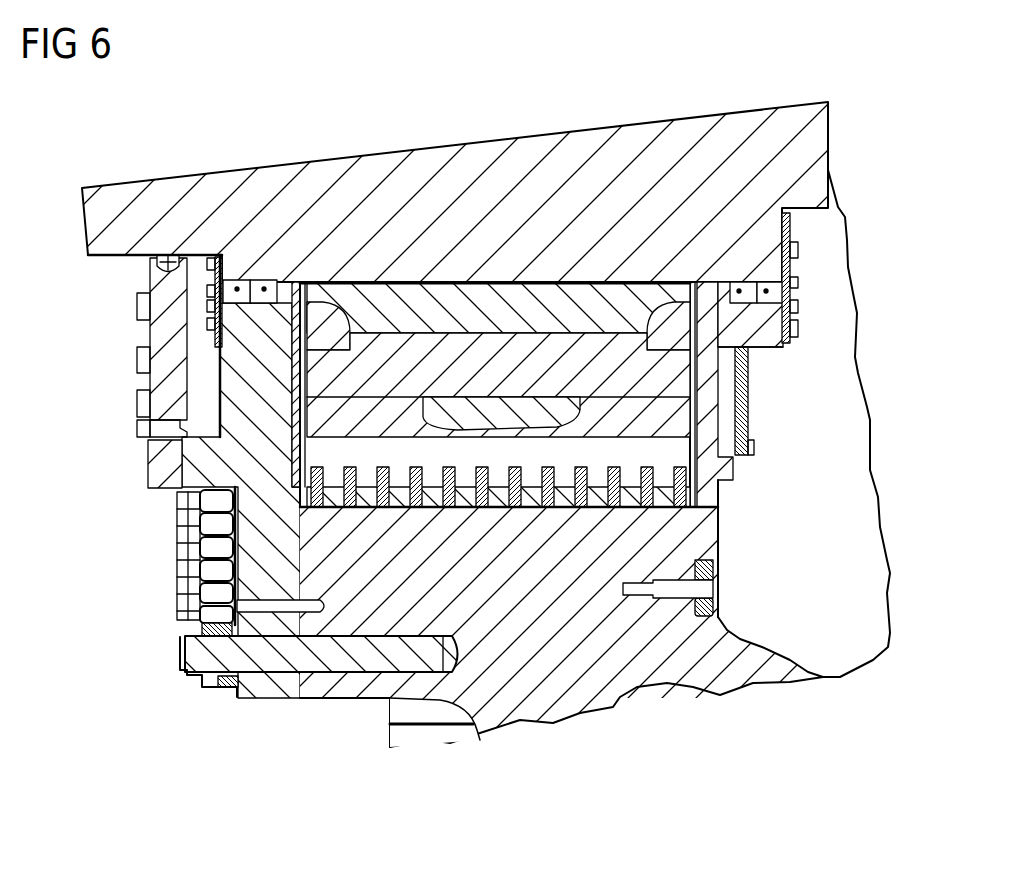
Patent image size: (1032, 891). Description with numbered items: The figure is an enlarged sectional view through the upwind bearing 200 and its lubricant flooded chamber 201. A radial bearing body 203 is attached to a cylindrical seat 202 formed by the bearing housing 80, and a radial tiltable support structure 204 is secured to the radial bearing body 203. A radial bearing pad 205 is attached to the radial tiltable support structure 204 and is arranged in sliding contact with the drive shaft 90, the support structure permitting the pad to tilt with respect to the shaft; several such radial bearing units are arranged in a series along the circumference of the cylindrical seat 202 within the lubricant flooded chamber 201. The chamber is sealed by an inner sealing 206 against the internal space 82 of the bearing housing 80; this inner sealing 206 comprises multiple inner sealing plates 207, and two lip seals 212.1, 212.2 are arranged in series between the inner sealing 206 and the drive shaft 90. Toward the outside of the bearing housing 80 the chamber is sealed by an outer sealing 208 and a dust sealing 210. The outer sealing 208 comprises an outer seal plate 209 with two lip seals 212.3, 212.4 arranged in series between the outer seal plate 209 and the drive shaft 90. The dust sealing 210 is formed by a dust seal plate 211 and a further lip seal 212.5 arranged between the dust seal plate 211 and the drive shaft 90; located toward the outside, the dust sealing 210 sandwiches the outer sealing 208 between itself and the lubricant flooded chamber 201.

The bearing housing 80 is at (778, 667).
The internal space 82 is at (856, 421).
The drive shaft 90 is at (398, 182).
The upwind bearing 200 is at (372, 687).
The lubricant flooded chamber 201 is at (328, 317).
The cylindrical seat 202 is at (367, 510).
The radial bearing body 203 is at (530, 460).
The radial tiltable support structure 204 is at (437, 405).
The radial bearing pad 205 is at (520, 317).
The inner sealing 206 is at (796, 447).
The inner sealing plates 207 is at (725, 455).
The outer sealing 208 is at (127, 532).
The outer seal plate 209 is at (195, 468).
The dust sealing 210 is at (103, 347).
The dust seal plate 211 is at (165, 330).
The lip seal 212.1 is at (770, 298).
The lip seal 212.2 is at (747, 300).
The lip seal 212.3 is at (235, 280).
The lip seal 212.4 is at (277, 293).
The further lip seal 212.5 is at (157, 262).